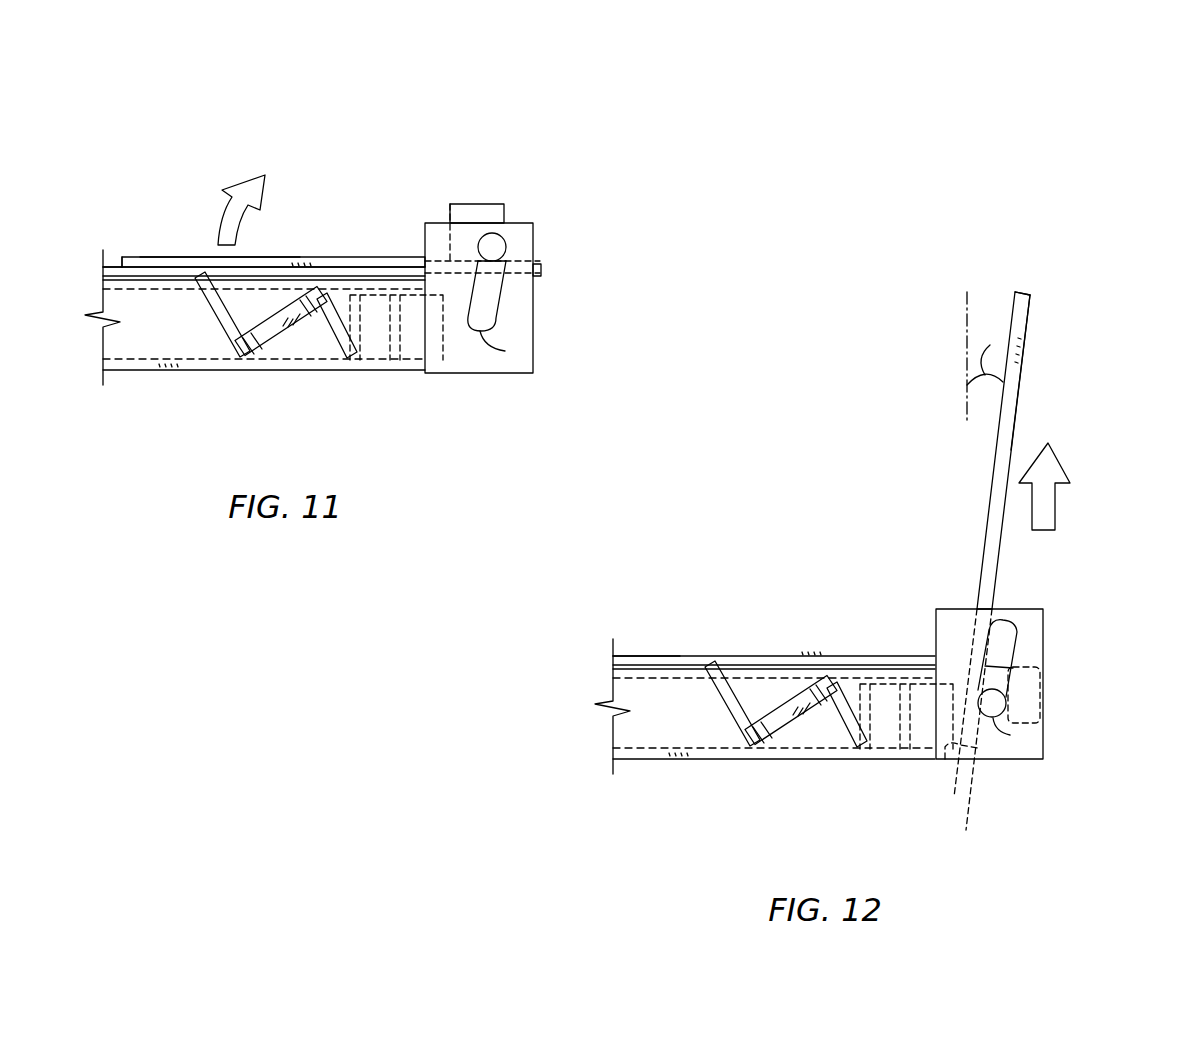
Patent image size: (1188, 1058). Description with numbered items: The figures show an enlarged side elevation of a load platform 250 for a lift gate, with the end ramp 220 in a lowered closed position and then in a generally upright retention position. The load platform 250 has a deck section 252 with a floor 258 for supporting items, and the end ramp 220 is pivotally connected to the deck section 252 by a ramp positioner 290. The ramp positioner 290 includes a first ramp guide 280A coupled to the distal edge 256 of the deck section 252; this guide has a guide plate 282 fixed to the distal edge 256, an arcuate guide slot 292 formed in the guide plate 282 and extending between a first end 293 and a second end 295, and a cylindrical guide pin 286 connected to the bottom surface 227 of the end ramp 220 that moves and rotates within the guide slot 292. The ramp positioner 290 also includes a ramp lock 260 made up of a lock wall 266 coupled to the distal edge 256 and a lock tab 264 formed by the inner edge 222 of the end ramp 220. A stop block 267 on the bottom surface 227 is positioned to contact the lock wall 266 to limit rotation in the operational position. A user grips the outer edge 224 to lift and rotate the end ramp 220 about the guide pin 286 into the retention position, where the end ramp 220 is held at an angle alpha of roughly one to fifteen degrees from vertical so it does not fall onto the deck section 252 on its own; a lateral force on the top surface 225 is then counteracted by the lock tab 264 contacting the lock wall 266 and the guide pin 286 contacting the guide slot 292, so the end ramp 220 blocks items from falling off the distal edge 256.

In FIG. 11, the end ramp 220 is at (266, 186).
In FIG. 12, the end ramp 220 is at (1039, 534).
In FIG. 11, the inner edge 222 is at (545, 270).
In FIG. 12, the inner edge 222 is at (970, 790).
In FIG. 11, the outer edge 224 is at (117, 265).
In FIG. 12, the outer edge 224 is at (1025, 292).
In FIG. 11, the top surface 225 is at (135, 258).
In FIG. 12, the top surface 225 is at (993, 457).
In FIG. 11, the bottom surface 227 is at (176, 256).
In FIG. 12, the bottom surface 227 is at (1020, 393).
In FIG. 11, the load platform 250 is at (123, 142).
In FIG. 12, the load platform 250 is at (702, 570).
In FIG. 11, the deck section 252 is at (122, 380).
In FIG. 12, the deck section 252 is at (626, 770).
In FIG. 11, the distal edge 256 is at (422, 340).
In FIG. 12, the distal edge 256 is at (935, 745).
In FIG. 11, the floor 258 is at (108, 262).
In FIG. 12, the floor 258 is at (648, 648).
In FIG. 11, the ramp lock 260 is at (534, 299).
In FIG. 12, the ramp lock 260 is at (1052, 708).
In FIG. 11, the lock tab 264 is at (543, 260).
In FIG. 12, the lock tab 264 is at (980, 753).
In FIG. 11, the lock wall 266 is at (443, 345).
In FIG. 12, the lock wall 266 is at (945, 760).
In FIG. 11, the stop block 267 is at (461, 204).
In FIG. 12, the stop block 267 is at (1045, 677).
In FIG. 11, the first ramp guide 280A is at (555, 322).
In FIG. 12, the first ramp guide 280A is at (1090, 702).
In FIG. 11, the guide plate 282 is at (520, 236).
In FIG. 12, the guide plate 282 is at (948, 607).
In FIG. 11, the guide pin 286 is at (495, 247).
In FIG. 12, the guide pin 286 is at (1000, 703).
In FIG. 11, the ramp positioner 290 is at (552, 308).
In FIG. 12, the ramp positioner 290 is at (1082, 711).
In FIG. 11, the guide slot 292 is at (505, 314).
In FIG. 12, the guide slot 292 is at (1022, 641).
In FIG. 11, the first end 293 is at (505, 351).
In FIG. 12, the first end 293 is at (1010, 735).
In FIG. 11, the second end 295 is at (490, 233).
In FIG. 12, the second end 295 is at (1003, 620).